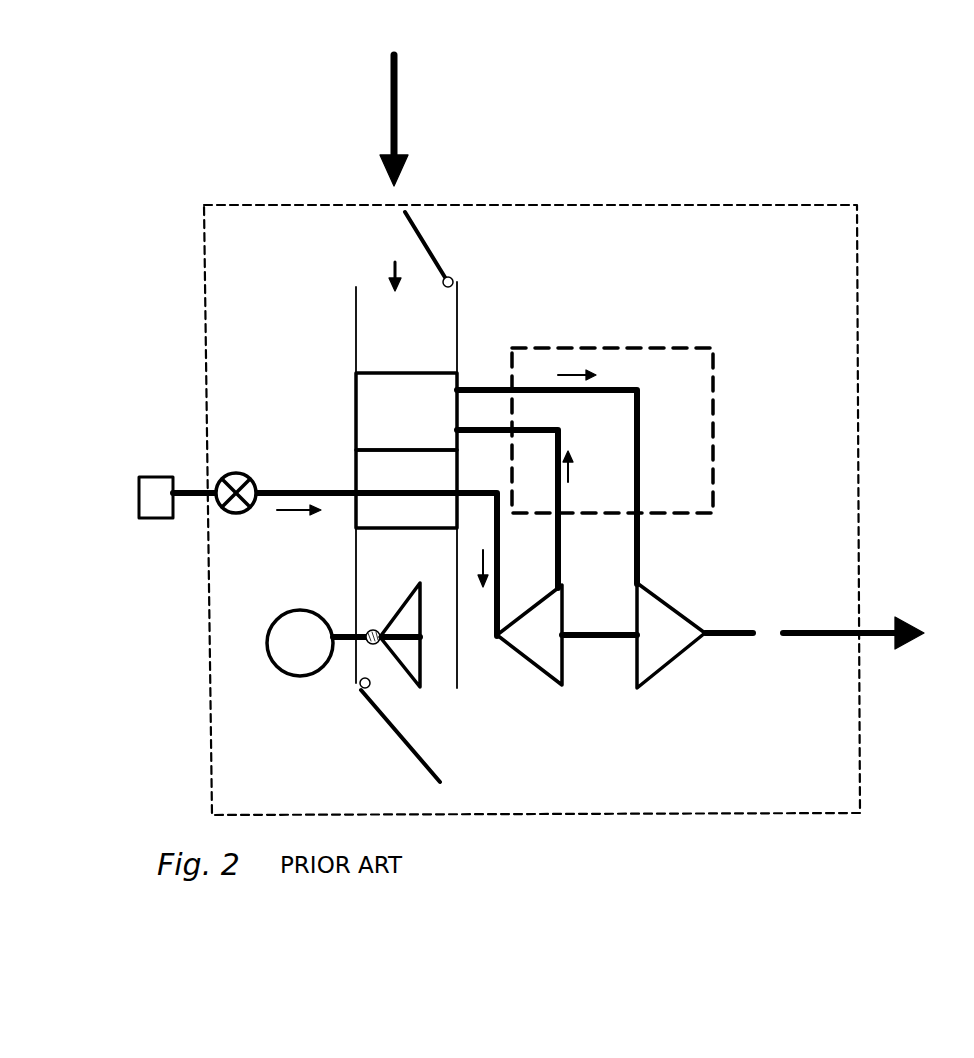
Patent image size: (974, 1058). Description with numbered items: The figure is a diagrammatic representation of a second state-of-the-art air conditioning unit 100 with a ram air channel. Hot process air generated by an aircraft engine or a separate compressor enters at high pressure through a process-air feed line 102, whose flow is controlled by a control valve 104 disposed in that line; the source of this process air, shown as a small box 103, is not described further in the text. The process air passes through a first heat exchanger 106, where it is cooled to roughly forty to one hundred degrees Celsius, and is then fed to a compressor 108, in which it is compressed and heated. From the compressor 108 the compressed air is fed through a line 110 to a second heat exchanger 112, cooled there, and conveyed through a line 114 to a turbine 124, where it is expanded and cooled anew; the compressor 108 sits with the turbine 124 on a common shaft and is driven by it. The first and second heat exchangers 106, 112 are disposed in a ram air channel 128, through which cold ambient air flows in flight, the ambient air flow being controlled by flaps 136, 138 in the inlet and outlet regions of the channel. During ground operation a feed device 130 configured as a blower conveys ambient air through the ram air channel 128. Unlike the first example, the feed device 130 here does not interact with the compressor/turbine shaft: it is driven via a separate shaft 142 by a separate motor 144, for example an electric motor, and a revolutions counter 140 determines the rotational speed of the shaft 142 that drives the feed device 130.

The air conditioning unit 100 is at (884, 332).
The process-air feed line 102 is at (270, 487).
The fuel source 103 is at (173, 520).
The control valve 104 is at (240, 514).
The first heat exchanger 106 is at (401, 521).
The compressor 108 is at (516, 648).
The line 110 is at (562, 542).
The second heat exchanger 112 is at (393, 388).
The line 114 is at (641, 433).
The turbine 124 is at (673, 617).
The ram air channel 128 is at (446, 317).
The feed device 130 is at (410, 615).
The flap 136 is at (440, 251).
The flap 138 is at (411, 748).
The revolutions counter 140 is at (376, 628).
The shaft 142 is at (343, 630).
The motor 144 is at (287, 665).